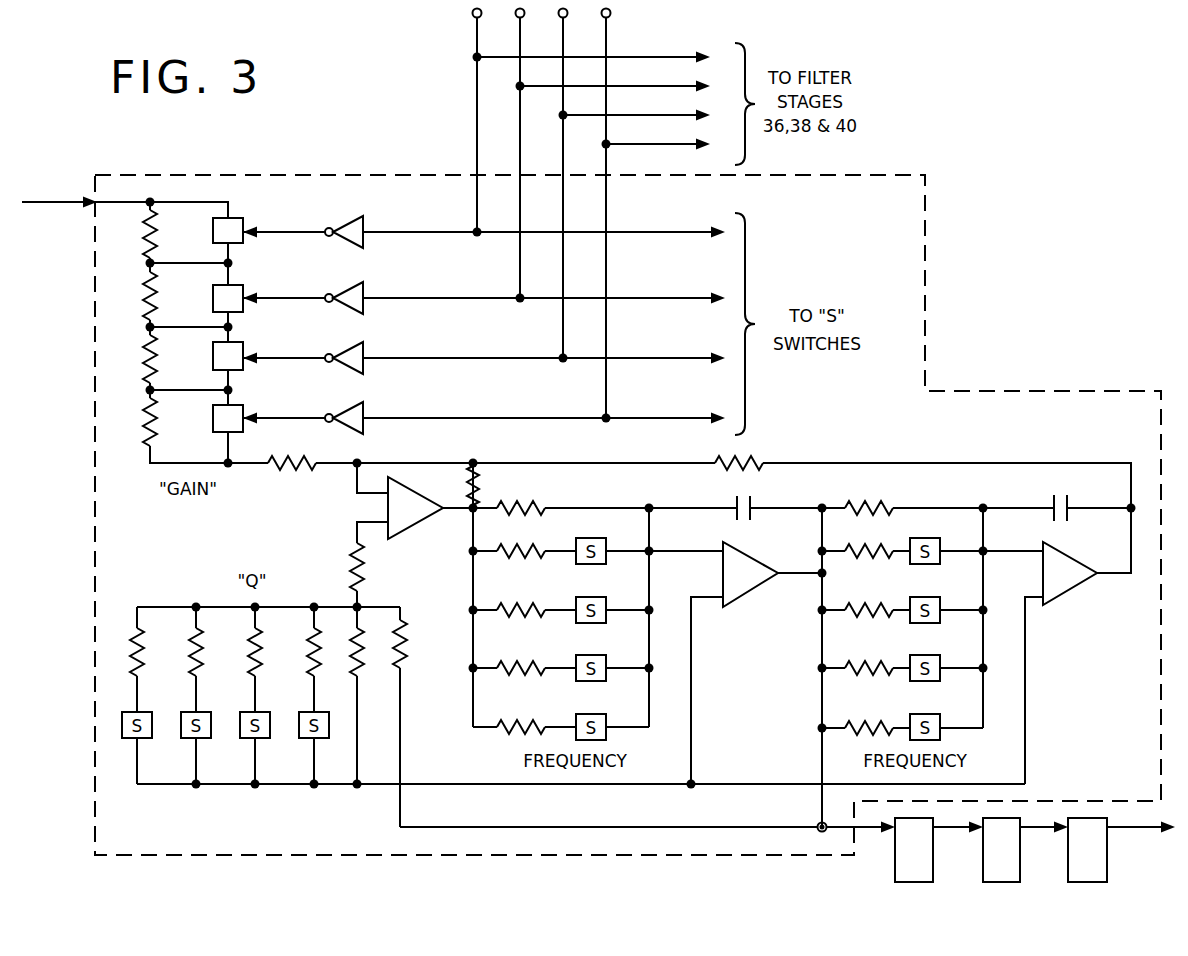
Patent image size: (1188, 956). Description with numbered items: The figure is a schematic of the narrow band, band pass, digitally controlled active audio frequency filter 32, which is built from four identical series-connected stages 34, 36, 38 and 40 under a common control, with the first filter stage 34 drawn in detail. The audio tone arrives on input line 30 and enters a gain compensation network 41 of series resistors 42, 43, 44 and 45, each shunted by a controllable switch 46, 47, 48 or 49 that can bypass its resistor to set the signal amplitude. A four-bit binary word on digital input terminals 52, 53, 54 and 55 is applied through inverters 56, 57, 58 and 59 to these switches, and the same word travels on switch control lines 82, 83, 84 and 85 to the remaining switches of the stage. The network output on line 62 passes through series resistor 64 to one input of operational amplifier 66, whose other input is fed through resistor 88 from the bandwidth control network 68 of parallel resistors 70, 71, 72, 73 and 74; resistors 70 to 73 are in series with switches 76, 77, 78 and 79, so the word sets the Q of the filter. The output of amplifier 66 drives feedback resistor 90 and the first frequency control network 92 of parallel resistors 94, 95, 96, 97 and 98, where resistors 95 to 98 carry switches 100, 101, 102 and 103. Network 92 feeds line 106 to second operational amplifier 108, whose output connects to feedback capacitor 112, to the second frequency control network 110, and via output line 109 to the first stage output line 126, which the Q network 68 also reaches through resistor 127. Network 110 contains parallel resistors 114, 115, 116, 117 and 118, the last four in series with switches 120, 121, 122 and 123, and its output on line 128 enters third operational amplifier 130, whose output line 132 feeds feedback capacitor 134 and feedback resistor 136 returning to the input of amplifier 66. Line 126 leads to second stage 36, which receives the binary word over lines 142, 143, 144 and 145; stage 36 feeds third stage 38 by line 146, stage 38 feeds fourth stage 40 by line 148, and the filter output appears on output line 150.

The input line 30 is at (58, 205).
The active audio frequency filter 32 is at (876, 164).
The first filter stage 34 is at (925, 240).
The second filter stage 36 is at (900, 870).
The third filter stage 38 is at (990, 867).
The fourth filter stage 40 is at (1078, 865).
The gain compensation network 41 is at (127, 333).
The gain resistor 42 is at (148, 256).
The gain resistor 43 is at (148, 320).
The gain resistor 44 is at (148, 368).
The gain resistor 45 is at (148, 434).
The controllable switch 46 is at (224, 240).
The controllable switch 47 is at (224, 308).
The controllable switch 48 is at (224, 366).
The controllable switch 49 is at (224, 429).
The digital input terminal 52 is at (472, 27).
The digital input terminal 53 is at (518, 22).
The digital input terminal 54 is at (560, 22).
The digital input terminal 55 is at (603, 22).
The inverter 56 is at (353, 238).
The inverter 57 is at (353, 304).
The inverter 58 is at (353, 364).
The inverter 59 is at (353, 424).
The output line of gain compensation network 62 is at (255, 462).
The series resistor 64 is at (312, 470).
The operational amplifier 66 is at (415, 515).
The bandwidth control resistor network 68 is at (520, 693).
The bandwidth control resistor 70 is at (136, 661).
The bandwidth control resistor 71 is at (194, 661).
The bandwidth control resistor 72 is at (253, 661).
The bandwidth control resistor 73 is at (312, 661).
The bandwidth control resistor 74 is at (356, 662).
The controllable switch 76 is at (128, 736).
The controllable switch 77 is at (186, 736).
The controllable switch 78 is at (244, 736).
The controllable switch 79 is at (304, 736).
The switch control line 82 is at (650, 230).
The switch control line 83 is at (650, 296).
The switch control line 84 is at (650, 356).
The switch control line 85 is at (650, 416).
The resistor 88 is at (364, 571).
The feedback resistor 90 is at (478, 470).
The first frequency control network 92 is at (541, 601).
The frequency control resistor 94 is at (533, 506).
The frequency control resistor 95 is at (533, 549).
The frequency control resistor 96 is at (528, 608).
The frequency control resistor 97 is at (528, 666).
The frequency control resistor 98 is at (528, 725).
The controllable switch 100 is at (595, 538).
The controllable switch 101 is at (603, 597).
The controllable switch 102 is at (603, 655).
The controllable switch 103 is at (603, 714).
The line 106 is at (700, 548).
The second operational amplifier 108 is at (755, 570).
The output line of amplifier 108 109 is at (792, 574).
The second frequency control network 110 is at (867, 651).
The feedback capacitor 112 is at (753, 503).
The frequency control resistor 114 is at (860, 507).
The frequency control resistor 115 is at (860, 550).
The frequency control resistor 116 is at (860, 608).
The frequency control resistor 117 is at (860, 666).
The frequency control resistor 118 is at (862, 727).
The controllable switch 120 is at (934, 540).
The controllable switch 121 is at (934, 599).
The controllable switch 122 is at (934, 657).
The controllable switch 123 is at (934, 717).
The first stage output line 126 is at (830, 832).
The resistor 127 is at (404, 628).
The line 128 is at (1006, 549).
The third operational amplifier 130 is at (1072, 573).
The output line of amplifier 130 132 is at (1107, 575).
The feedback capacitor 134 is at (1061, 498).
The feedback resistor 136 is at (735, 469).
The line 142 is at (622, 56).
The line 143 is at (622, 85).
The line 144 is at (622, 114).
The line 145 is at (622, 143).
The line 146 is at (943, 830).
The line 148 is at (1031, 830).
The filter output line 150 is at (1128, 830).